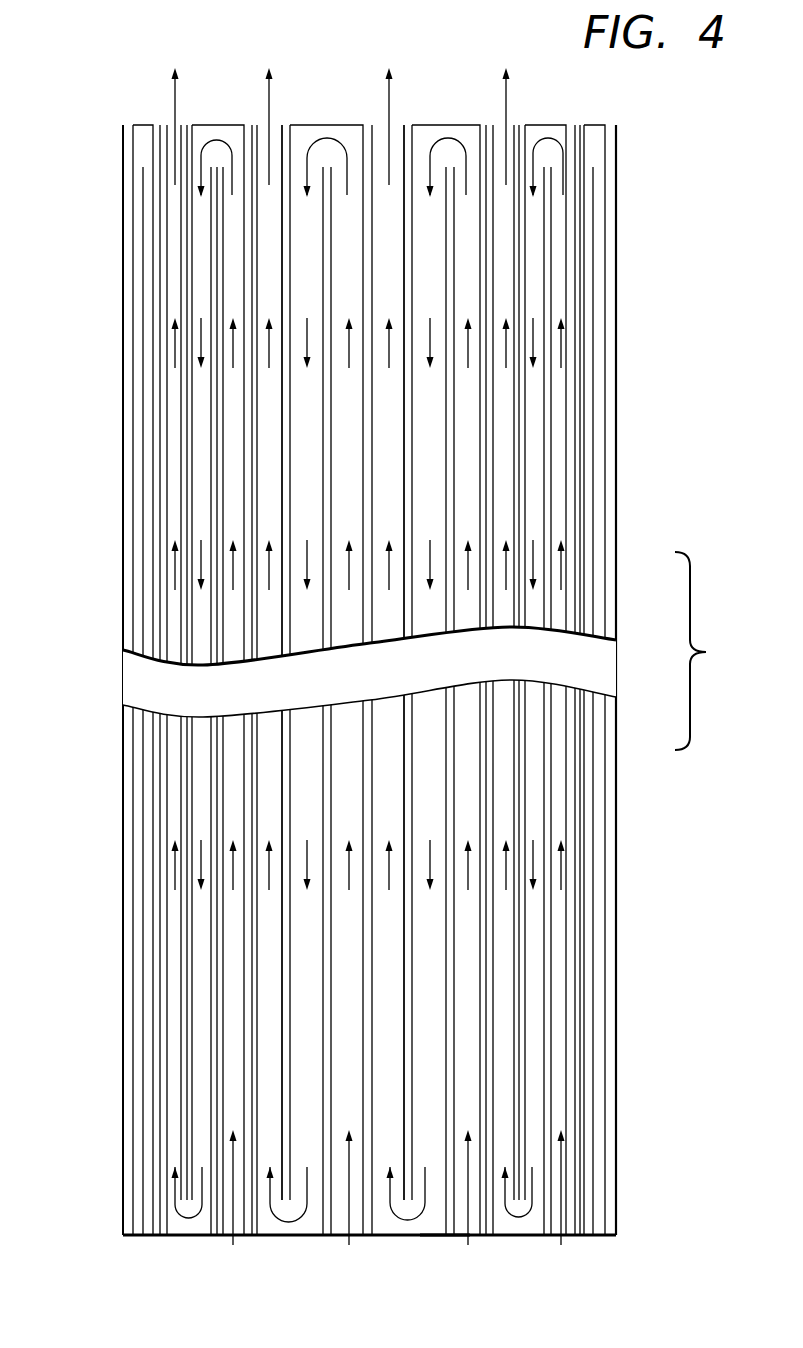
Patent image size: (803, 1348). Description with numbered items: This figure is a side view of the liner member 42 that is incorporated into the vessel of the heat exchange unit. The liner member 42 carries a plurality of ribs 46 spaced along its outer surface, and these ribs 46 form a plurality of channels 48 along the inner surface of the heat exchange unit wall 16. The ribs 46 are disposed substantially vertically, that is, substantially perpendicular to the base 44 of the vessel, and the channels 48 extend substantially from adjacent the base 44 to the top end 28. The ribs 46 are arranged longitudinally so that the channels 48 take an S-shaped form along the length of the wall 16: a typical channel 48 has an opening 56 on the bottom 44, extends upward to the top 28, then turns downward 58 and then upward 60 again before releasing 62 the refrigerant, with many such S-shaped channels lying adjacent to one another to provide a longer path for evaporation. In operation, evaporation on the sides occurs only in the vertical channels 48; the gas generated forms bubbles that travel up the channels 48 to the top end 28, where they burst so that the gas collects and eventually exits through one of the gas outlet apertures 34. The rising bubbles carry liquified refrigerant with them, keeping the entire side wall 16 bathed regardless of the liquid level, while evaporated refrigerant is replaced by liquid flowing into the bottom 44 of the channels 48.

The heat exchange unit wall 16 is at (123, 217).
The top end 28 is at (573, 107).
The gas outlet aperture 34 is at (273, 130).
The releasing 62 is at (390, 100).
The downward turn 58 is at (441, 130).
The channel 48 is at (555, 243).
The rib 46 is at (553, 440).
The liner member 42 is at (101, 920).
The base 44 is at (235, 1236).
The upward turn 60 is at (394, 1230).
The opening 56 is at (437, 1236).